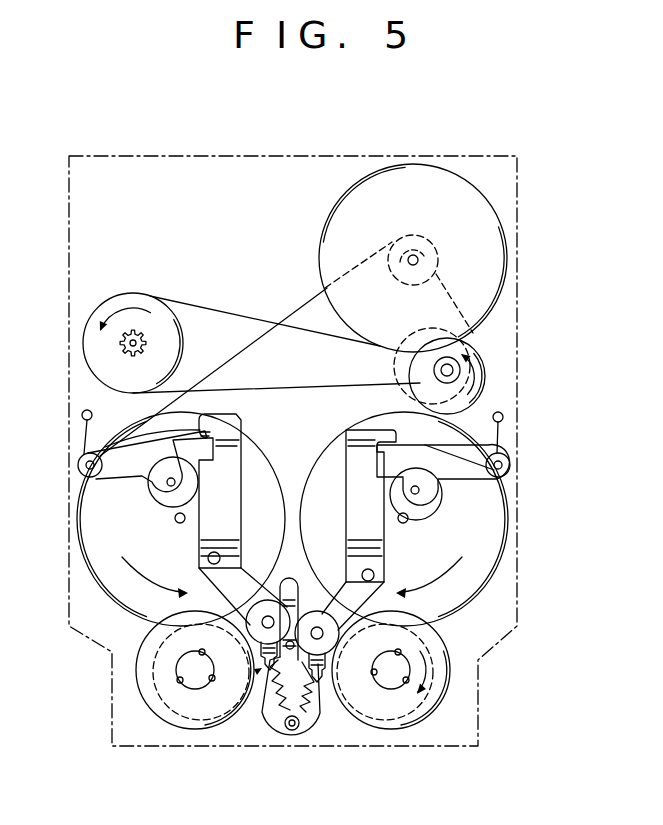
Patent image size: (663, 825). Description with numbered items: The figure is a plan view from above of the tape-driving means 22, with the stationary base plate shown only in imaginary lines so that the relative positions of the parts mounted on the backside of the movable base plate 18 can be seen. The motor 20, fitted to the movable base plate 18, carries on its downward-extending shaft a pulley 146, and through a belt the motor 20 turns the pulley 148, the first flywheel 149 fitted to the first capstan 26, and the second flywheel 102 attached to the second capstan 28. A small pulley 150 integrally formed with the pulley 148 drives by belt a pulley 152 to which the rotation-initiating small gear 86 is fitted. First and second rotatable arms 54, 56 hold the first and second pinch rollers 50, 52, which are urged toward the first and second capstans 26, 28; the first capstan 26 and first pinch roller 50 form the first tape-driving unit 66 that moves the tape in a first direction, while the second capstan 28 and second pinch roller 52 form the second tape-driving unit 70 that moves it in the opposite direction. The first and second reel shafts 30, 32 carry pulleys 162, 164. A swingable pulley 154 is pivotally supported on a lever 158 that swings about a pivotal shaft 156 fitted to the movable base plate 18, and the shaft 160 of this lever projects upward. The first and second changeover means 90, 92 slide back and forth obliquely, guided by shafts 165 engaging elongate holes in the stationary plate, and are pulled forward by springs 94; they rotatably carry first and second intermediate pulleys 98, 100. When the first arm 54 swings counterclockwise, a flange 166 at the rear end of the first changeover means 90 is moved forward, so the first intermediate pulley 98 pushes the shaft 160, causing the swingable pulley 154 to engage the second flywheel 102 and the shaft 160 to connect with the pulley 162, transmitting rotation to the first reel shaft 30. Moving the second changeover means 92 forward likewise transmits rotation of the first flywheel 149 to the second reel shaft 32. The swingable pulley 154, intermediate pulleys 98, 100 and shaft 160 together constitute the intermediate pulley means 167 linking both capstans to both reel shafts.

The movable base plate 18 is at (519, 270).
The motor 20 is at (406, 174).
The tape-driving means 22 is at (215, 176).
The first capstan 26 is at (404, 524).
The second capstan 28 is at (179, 524).
The first reel shaft 30 is at (398, 662).
The second reel shaft 32 is at (190, 660).
The first pinch roller 50 is at (442, 490).
The second pinch roller 52 is at (165, 489).
The first rotatable arm 54 is at (511, 470).
The second rotatable arm 56 is at (78, 471).
The first tape-driving unit 66 is at (410, 520).
The second tape-driving unit 70 is at (170, 514).
The small gear 86 is at (118, 349).
The first changeover means 90 is at (360, 490).
The second changeover means 92 is at (230, 490).
The spring 94 is at (266, 708).
The first intermediate pulley 98 is at (330, 636).
The second intermediate pulley 100 is at (246, 628).
The second flywheel 102 is at (82, 535).
The pulley 146 is at (424, 252).
The pulley 148 is at (488, 356).
The first flywheel 149 is at (504, 532).
The small pulley 150 is at (440, 372).
The pulley 152 is at (130, 300).
The swingable pulley 154 is at (339, 690).
The pivotal shaft 156 is at (292, 737).
The swingable lever 158 is at (319, 736).
The shaft 160 is at (298, 651).
The pulley 162 is at (450, 676).
The pulley 164 is at (138, 682).
The shaft 165 is at (207, 558).
The flange 166 is at (383, 430).
The intermediate pulley means 167 is at (248, 680).